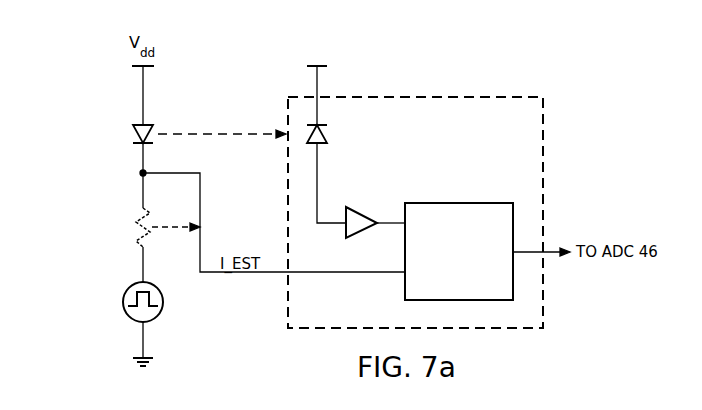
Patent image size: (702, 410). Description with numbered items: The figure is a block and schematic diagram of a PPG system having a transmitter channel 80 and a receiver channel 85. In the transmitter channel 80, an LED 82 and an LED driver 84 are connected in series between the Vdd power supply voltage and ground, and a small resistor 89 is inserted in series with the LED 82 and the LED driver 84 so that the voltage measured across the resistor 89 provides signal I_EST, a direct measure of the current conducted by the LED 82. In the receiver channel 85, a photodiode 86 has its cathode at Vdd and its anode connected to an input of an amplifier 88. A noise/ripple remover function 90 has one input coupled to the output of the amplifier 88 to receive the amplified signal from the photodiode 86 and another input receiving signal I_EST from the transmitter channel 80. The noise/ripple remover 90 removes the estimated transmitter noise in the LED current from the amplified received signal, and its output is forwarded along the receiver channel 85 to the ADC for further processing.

The transmitter channel 80 is at (57, 119).
The LED 82 is at (133, 136).
The LED driver 84 is at (123, 302).
The receiver channel 85 is at (416, 90).
The photodiode 86 is at (328, 131).
The amplifier 88 is at (360, 212).
The resistor 89 is at (134, 232).
The noise/ripple remover function 90 is at (460, 202).